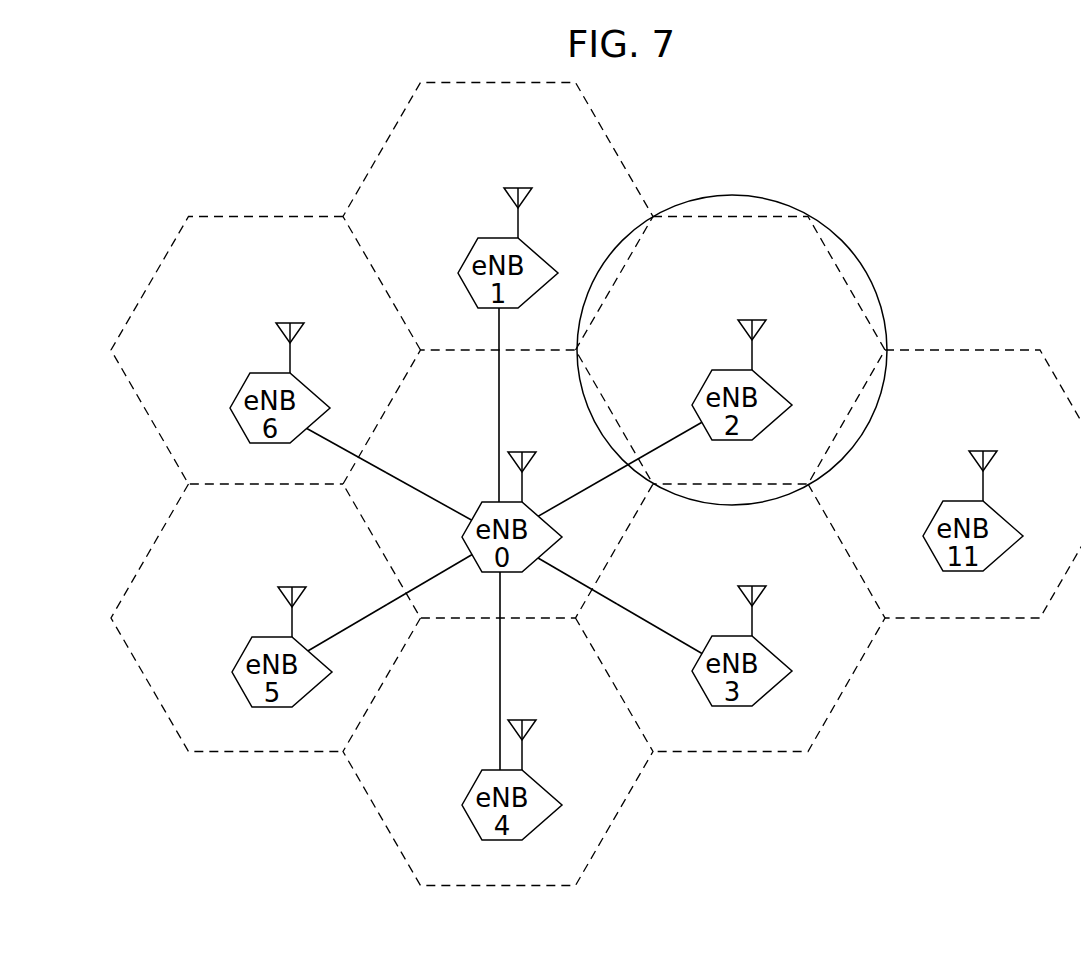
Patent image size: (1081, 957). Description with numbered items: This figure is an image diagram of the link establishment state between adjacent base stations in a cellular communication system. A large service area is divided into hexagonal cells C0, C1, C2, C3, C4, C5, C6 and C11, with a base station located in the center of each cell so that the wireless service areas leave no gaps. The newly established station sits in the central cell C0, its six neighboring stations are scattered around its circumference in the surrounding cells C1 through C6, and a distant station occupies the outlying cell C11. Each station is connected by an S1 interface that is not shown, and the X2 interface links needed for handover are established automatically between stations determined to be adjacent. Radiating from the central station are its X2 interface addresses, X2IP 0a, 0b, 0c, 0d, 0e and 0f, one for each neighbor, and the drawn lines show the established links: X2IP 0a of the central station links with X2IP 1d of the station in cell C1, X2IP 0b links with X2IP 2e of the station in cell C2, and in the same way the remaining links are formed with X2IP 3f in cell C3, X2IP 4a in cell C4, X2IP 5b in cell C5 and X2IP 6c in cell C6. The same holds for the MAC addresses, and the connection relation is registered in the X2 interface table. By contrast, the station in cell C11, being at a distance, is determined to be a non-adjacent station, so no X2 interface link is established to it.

The X2IP of eNB0 0a is at (490, 500).
The X2IP of eNB0 0b is at (532, 518).
The X2IP of eNB0 0c is at (536, 554).
The X2IP of eNB0 0d is at (512, 574).
The X2IP of eNB0 0e is at (472, 566).
The X2IP of eNB0 0f is at (471, 522).
The X2IP of eNB1 1d is at (507, 309).
The X2IP of eNB2 2e is at (700, 427).
The X2IP of eNB3 3f is at (700, 656).
The X2IP of eNB4 4a is at (492, 770).
The X2IP of eNB5 5b is at (302, 652).
The X2IP of eNB6 6c is at (305, 420).
The cell C0 is at (424, 409).
The cell C1 is at (525, 124).
The cell C2 is at (720, 256).
The cell C3 is at (713, 545).
The cell C4 is at (533, 675).
The cell C5 is at (260, 525).
The cell C6 is at (258, 257).
The cell C11 is at (995, 386).